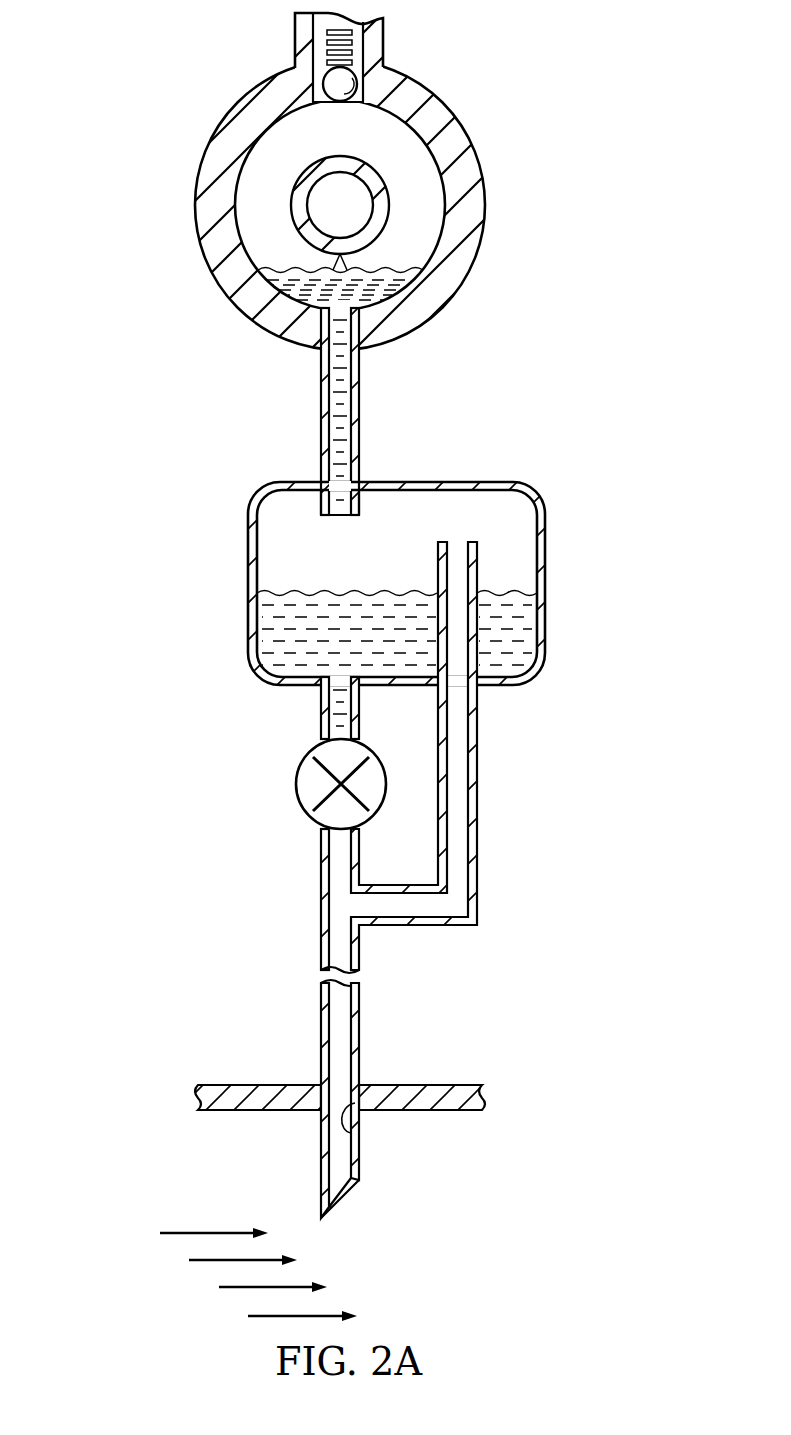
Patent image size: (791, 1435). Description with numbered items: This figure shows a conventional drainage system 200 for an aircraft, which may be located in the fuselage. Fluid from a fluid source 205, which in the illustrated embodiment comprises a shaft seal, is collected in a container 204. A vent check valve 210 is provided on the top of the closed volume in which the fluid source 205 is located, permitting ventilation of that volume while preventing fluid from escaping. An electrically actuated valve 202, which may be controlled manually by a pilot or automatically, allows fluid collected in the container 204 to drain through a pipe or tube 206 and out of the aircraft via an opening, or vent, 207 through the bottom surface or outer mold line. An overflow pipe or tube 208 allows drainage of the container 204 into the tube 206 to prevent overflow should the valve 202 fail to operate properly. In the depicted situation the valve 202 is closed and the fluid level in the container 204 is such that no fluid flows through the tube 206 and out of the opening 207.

The drainage system 200 is at (88, 70).
The valve 202 is at (295, 783).
The container 204 is at (248, 585).
The fluid source 205 is at (194, 201).
The pipe or tube 206 is at (321, 1036).
The opening or vent 207 is at (351, 1133).
The overflow pipe or tube 208 is at (478, 740).
The vent check valve 210 is at (321, 114).